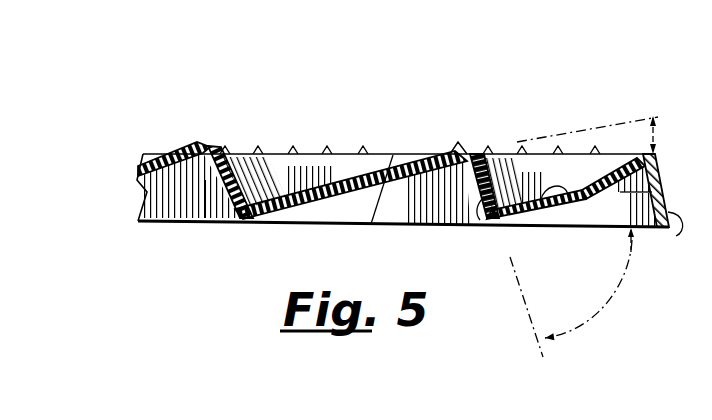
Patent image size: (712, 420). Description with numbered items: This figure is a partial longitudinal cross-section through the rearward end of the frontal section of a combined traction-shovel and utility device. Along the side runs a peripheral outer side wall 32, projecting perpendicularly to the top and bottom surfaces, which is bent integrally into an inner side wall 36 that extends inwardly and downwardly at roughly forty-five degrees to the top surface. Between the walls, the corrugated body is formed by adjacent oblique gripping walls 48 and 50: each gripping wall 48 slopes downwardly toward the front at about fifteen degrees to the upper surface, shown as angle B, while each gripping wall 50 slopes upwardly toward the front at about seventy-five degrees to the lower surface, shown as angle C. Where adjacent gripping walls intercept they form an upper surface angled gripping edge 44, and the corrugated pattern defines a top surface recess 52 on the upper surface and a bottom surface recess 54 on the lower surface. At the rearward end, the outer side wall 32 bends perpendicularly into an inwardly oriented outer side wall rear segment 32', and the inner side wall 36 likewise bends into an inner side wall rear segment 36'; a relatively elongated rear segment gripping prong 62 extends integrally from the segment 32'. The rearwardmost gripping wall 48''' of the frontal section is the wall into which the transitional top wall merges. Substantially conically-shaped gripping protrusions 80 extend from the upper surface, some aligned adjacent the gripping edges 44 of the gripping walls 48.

The peripheral outer side wall 32 is at (403, 204).
The peripheral inner side wall 36 is at (191, 123).
The upper surface angled gripping edge 44 is at (483, 157).
The gripping wall 48 is at (351, 149).
The gripping wall 50 is at (479, 200).
The top surface recess 52 is at (262, 176).
The bottom surface recess 54 is at (433, 200).
The rear segment gripping prong 62 is at (665, 186).
The gripping protrusion 80 is at (363, 150).
The front section inner side wall rear segment 36' is at (597, 135).
The rearwardmost gripping wall 48''' is at (566, 212).
The front section outer side wall rear segment 32' is at (671, 236).
The angle B is at (596, 135).
The angle C is at (572, 292).